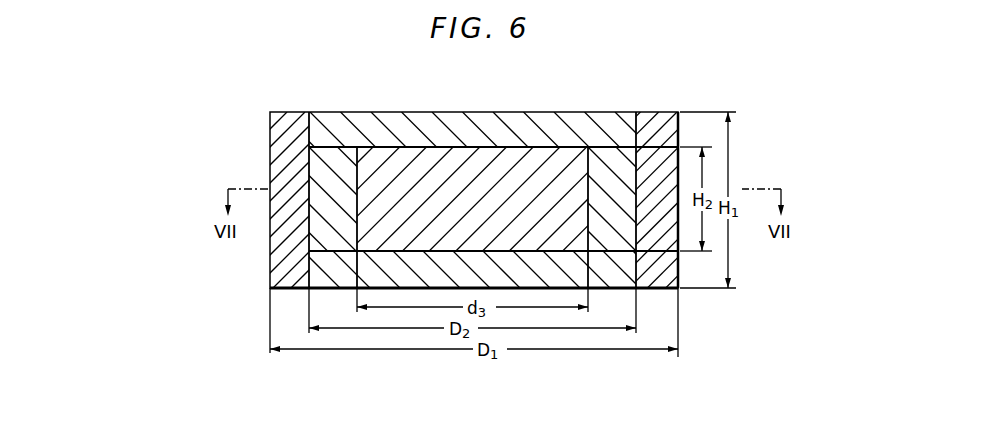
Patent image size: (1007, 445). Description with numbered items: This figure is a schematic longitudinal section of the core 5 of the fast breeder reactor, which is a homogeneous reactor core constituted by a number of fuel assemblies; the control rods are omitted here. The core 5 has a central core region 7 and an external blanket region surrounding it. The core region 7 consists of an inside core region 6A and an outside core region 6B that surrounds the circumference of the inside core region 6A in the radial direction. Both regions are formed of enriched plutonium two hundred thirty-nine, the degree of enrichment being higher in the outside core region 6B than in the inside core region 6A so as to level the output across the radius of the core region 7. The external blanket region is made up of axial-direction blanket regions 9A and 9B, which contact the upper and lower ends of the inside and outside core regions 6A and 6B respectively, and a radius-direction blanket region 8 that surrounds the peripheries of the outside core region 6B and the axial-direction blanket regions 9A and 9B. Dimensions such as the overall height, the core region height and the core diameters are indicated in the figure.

The core 5 is at (668, 97).
The inside core region 6A is at (382, 150).
The outside core region 6B is at (331, 152).
The core region 7 is at (497, 158).
The radius-direction blanket region 8 is at (272, 267).
The axial-direction blanket region 9A is at (600, 122).
The axial-direction blanket region 9B is at (618, 272).